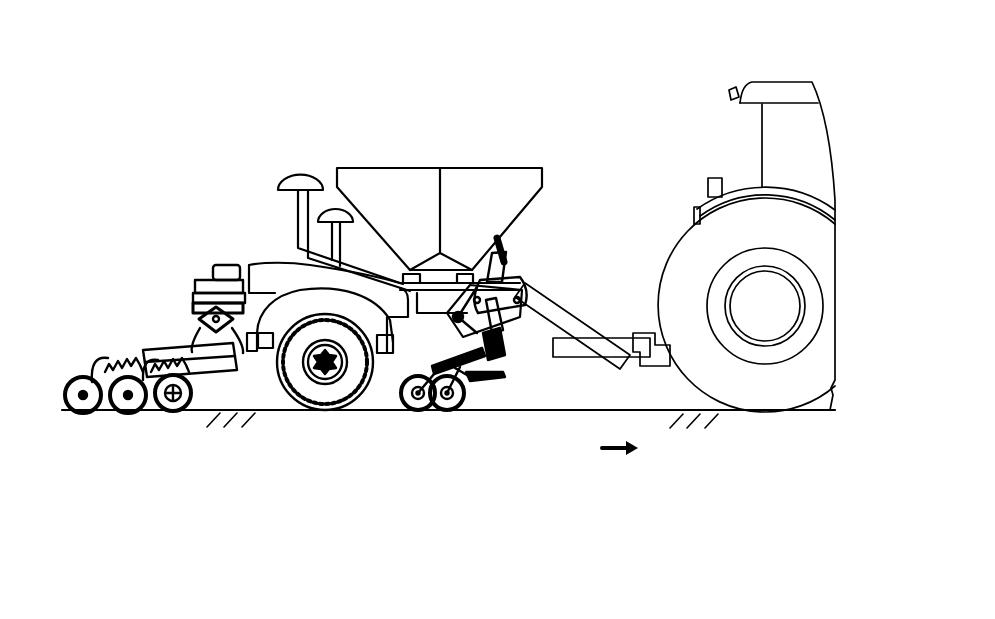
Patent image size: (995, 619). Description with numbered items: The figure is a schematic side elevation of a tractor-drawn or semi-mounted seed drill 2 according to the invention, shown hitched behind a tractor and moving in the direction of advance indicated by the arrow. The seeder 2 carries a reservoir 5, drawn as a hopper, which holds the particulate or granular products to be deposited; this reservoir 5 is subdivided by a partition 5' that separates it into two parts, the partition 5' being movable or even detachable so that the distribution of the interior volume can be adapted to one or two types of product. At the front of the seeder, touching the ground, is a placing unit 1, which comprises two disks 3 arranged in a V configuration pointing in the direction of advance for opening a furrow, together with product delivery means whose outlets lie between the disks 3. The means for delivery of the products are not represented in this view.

The seed drill 2 is at (412, 88).
The reservoir 5 is at (439, 176).
The partition 5' is at (439, 170).
The placing unit 1 is at (155, 392).
The disks 3 is at (183, 437).